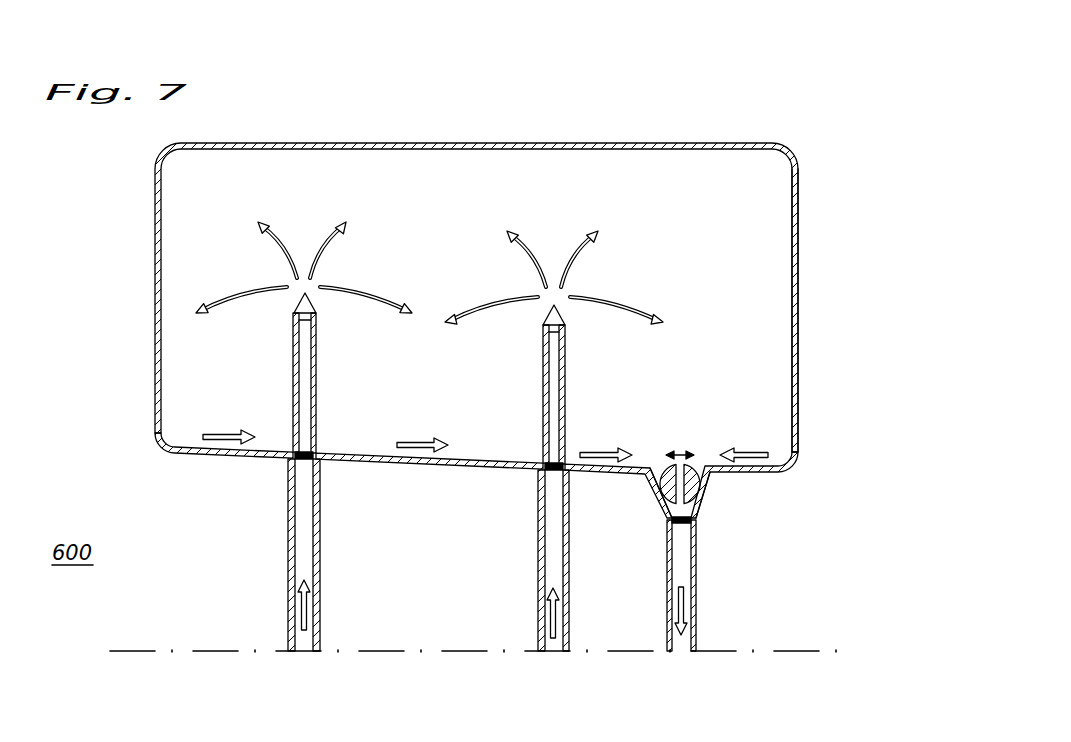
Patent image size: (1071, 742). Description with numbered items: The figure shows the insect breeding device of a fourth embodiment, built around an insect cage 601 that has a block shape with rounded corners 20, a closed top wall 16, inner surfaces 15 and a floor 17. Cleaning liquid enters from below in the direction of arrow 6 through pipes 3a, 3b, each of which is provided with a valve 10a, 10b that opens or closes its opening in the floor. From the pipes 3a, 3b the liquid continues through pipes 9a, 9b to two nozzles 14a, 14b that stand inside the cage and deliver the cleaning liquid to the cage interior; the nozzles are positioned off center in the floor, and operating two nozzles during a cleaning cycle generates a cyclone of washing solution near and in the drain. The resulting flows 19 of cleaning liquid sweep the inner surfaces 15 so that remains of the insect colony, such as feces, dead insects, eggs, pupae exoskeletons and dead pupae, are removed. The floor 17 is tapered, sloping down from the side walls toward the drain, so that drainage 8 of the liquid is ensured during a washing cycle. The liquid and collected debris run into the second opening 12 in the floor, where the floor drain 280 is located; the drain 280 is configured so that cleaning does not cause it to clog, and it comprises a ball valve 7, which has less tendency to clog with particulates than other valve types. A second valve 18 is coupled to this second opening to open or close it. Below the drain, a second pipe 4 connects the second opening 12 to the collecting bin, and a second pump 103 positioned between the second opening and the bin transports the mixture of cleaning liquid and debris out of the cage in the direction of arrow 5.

The insect cage 601 is at (711, 88).
The closed top wall 16 is at (408, 143).
The inner surfaces 15 is at (798, 305).
The rounded corners 20 is at (160, 438).
The floor 17 is at (249, 453).
The ball valve 7 is at (715, 470).
The pipe 9a is at (343, 373).
The pipe 9b is at (593, 384).
The nozzle 14a is at (305, 309).
The nozzle 14b is at (554, 321).
The valve 10a is at (302, 459).
The valve 10b is at (552, 471).
The pipe 3a is at (318, 550).
The pipe 3b is at (568, 557).
The arrow (cleaning liquid inflow) 6 is at (298, 616).
The drainage 8 is at (232, 437).
The flows of cleaning liquid 19 is at (257, 228).
The second valve 18 is at (678, 451).
The second opening (drainage opening) 12 is at (638, 483).
The drain 280 is at (695, 519).
The second pipe 4 is at (667, 606).
The second pump 103 is at (677, 527).
The arrow (outflow direction) 5 is at (690, 631).